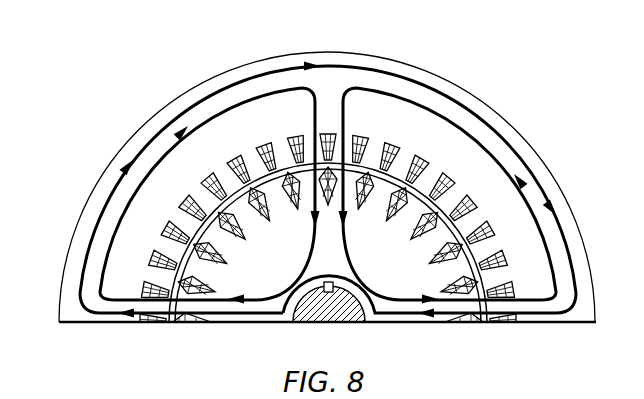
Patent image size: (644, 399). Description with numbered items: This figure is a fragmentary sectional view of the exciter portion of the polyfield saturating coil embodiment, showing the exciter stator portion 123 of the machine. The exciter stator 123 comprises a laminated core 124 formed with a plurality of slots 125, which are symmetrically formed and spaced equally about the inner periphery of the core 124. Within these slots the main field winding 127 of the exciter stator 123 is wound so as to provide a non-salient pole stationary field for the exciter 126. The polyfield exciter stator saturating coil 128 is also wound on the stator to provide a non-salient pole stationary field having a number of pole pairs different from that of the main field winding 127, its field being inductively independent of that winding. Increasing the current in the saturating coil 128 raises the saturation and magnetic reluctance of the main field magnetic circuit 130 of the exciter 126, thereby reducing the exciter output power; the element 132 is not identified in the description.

The exciter stator portion 123 is at (236, 64).
The laminated core 124 is at (323, 51).
The slots 125 is at (172, 268).
The exciter 126 is at (524, 126).
The main field winding 127 is at (185, 241).
The polyfield exciter stator saturating coil 128 is at (186, 204).
The main field magnetic circuit 130 is at (524, 196).
The outer flow path return 132 is at (431, 84).